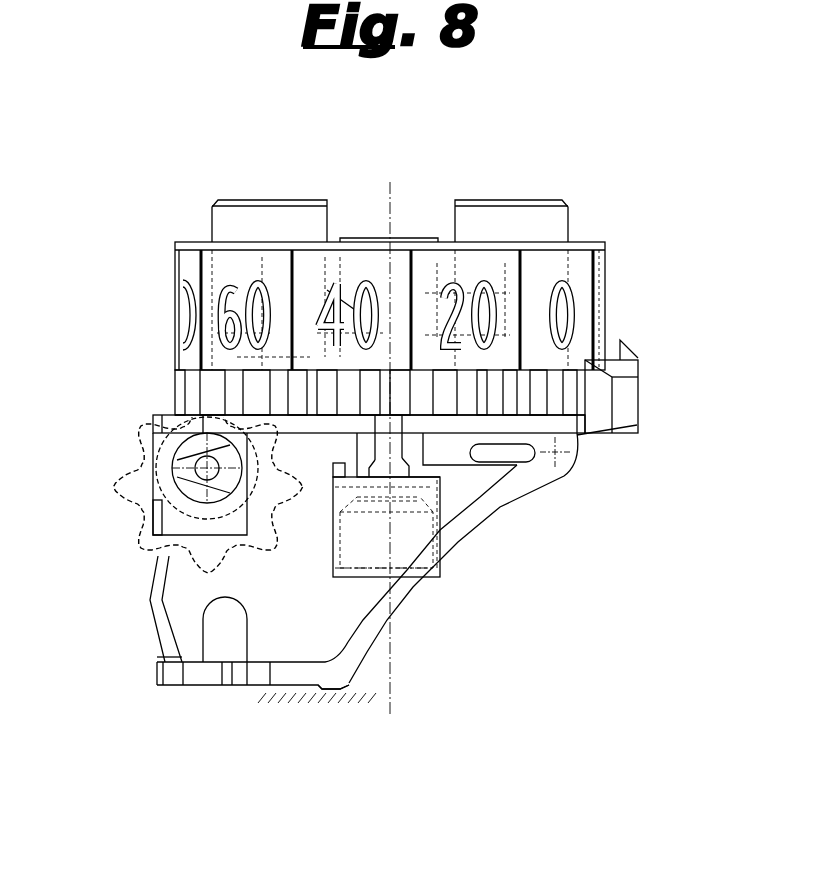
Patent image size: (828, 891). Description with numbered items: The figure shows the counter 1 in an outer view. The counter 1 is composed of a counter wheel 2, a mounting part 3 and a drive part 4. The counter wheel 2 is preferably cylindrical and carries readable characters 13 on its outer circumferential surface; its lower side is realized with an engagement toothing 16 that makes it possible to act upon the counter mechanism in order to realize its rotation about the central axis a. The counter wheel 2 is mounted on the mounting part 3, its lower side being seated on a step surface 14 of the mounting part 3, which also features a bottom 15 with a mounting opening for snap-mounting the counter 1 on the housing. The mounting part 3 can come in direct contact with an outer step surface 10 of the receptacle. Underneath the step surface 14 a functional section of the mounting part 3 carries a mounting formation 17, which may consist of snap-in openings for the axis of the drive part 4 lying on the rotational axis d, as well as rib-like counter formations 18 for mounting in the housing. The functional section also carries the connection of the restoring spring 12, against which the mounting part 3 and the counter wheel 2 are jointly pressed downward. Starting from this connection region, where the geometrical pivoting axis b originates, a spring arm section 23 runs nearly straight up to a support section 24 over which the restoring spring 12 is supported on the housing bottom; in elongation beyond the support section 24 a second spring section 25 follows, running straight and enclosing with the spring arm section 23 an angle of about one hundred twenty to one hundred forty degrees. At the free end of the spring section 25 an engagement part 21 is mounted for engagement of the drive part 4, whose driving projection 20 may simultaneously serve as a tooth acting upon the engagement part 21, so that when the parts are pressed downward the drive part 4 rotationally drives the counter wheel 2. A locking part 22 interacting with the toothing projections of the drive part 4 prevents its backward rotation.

The counter 1 is at (175, 150).
The counter wheel 2 is at (578, 263).
The mounting part 3 is at (438, 447).
The drive part 4 is at (140, 463).
The step surface 10 is at (263, 200).
The restoring spring 12 is at (472, 550).
The characters 13 is at (370, 287).
The step surface 14 is at (540, 402).
The bottom 15 is at (580, 280).
The engagement toothing 16 is at (449, 380).
The mounting formation 17 is at (145, 533).
The counter formations 18 is at (365, 453).
The driving projection 20 is at (127, 478).
The engagement part 21 is at (152, 592).
The locking part 22 is at (262, 282).
The spring arm section 23 is at (407, 587).
The support section 24 is at (335, 690).
The second spring section 25 is at (208, 677).
The central axis a is at (389, 452).
The pivot axis b is at (573, 477).
The rotational axis d is at (150, 425).